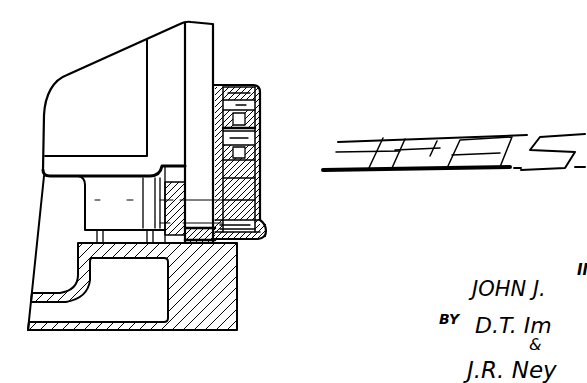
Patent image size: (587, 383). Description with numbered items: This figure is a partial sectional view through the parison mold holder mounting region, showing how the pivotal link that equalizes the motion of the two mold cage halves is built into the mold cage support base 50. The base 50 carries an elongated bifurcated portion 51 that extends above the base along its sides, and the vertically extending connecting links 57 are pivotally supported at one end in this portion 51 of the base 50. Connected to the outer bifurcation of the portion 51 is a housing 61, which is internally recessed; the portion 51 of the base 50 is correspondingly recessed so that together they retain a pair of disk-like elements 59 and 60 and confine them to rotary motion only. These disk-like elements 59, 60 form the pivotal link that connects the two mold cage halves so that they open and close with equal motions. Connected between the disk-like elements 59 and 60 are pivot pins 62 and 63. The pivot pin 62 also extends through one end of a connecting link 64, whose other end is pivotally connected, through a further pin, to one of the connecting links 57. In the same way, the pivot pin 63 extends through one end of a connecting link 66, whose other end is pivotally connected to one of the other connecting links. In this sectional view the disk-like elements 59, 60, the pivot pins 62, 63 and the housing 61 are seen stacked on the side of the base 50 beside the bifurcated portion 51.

The mold cage support base 50 is at (177, 323).
The bifurcated portion 51 is at (227, 250).
The connecting link 57 is at (210, 40).
The disk-like element 59 is at (232, 100).
The connecting link 64 is at (250, 88).
The disk-like element 60 is at (258, 95).
The pivot pin 62 is at (258, 110).
The pivot pin 63 is at (258, 150).
The connecting link 66 is at (258, 186).
The housing 61 is at (260, 195).